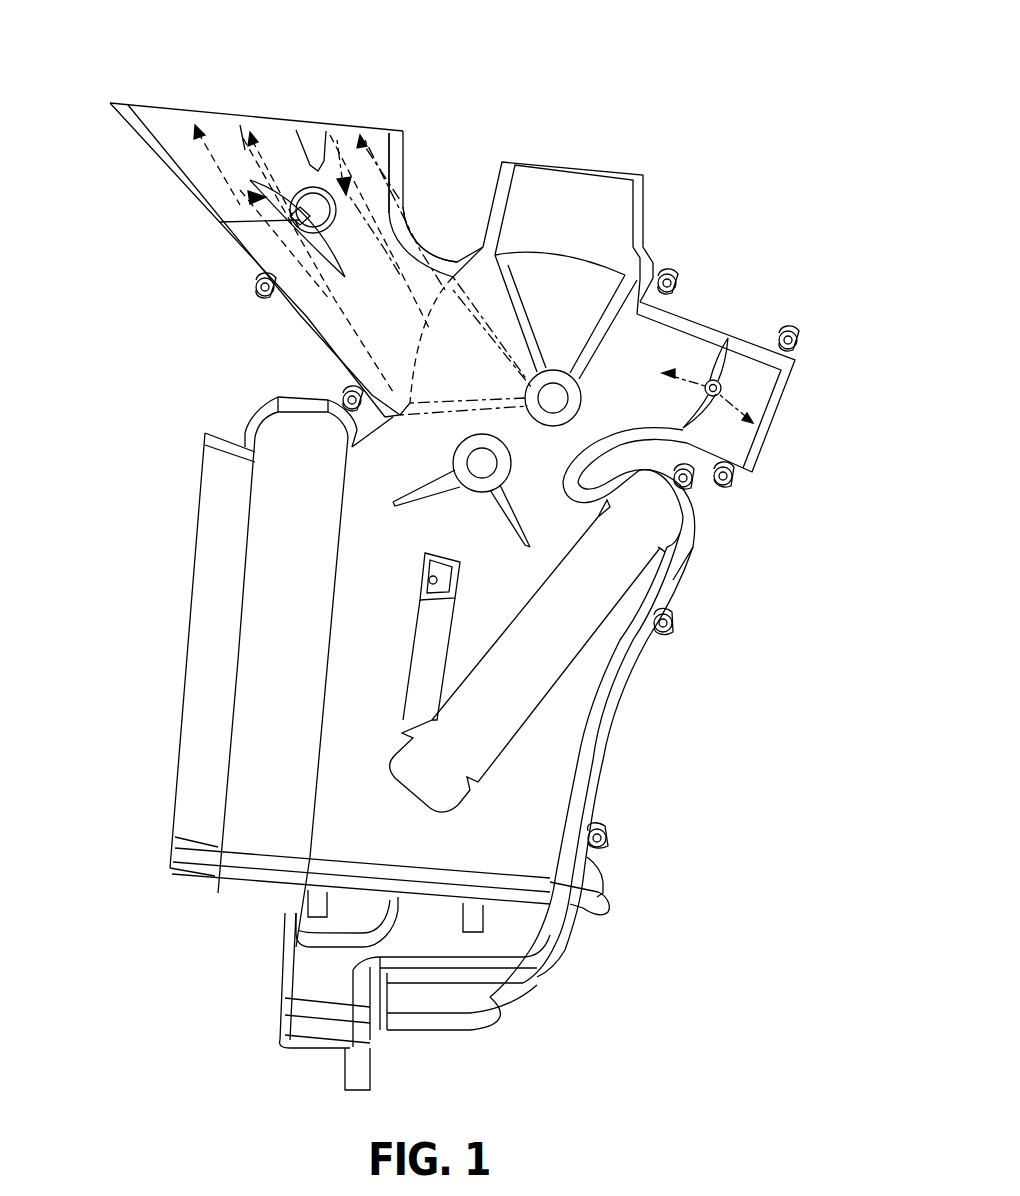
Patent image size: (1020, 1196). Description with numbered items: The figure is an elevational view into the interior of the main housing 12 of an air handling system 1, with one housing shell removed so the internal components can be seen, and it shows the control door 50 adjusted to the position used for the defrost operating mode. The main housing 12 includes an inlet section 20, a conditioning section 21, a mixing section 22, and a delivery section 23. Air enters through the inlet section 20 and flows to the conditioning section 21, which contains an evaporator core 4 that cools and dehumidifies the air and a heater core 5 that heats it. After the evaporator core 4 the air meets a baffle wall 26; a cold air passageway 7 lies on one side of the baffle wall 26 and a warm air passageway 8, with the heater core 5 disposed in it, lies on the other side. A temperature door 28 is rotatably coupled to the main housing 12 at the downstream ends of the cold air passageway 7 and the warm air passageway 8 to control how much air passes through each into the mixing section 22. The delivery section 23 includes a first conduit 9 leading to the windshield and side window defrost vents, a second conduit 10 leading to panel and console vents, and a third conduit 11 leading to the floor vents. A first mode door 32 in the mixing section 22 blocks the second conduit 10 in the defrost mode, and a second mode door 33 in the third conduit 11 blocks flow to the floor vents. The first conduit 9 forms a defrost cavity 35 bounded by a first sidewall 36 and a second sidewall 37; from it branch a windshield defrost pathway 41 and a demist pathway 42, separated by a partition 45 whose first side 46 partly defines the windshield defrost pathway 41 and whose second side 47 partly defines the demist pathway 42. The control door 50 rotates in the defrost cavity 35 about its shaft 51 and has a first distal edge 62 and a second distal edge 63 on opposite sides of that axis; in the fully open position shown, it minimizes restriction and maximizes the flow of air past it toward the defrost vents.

The air handling system 1 is at (700, 188).
The evaporator core 4 is at (237, 768).
The heater core 5 is at (495, 727).
The cold air passageway 7 is at (390, 470).
The warm air passageway 8 is at (533, 490).
The first conduit 9 is at (345, 290).
The second conduit 10 is at (567, 188).
The third conduit 11 is at (697, 337).
The main housing 12 is at (627, 668).
The inlet section 20 is at (236, 545).
The conditioning section 21 is at (414, 545).
The mixing section 22 is at (641, 371).
The delivery section 23 is at (152, 240).
The baffle wall 26 is at (427, 633).
The temperature door 28 is at (482, 478).
The first mode door 32 is at (578, 398).
The second mode door 33 is at (727, 385).
The defrost cavity 35 is at (350, 197).
The first sidewall 36 is at (220, 222).
The second sidewall 37 is at (405, 243).
The windshield defrost pathway 41 is at (240, 125).
The demist pathway 42 is at (370, 130).
The partition 45 is at (301, 128).
The first side 46 is at (273, 120).
The second side 47 is at (337, 125).
The control door 50 is at (250, 197).
The shaft 51 is at (290, 216).
The first distal edge 62 is at (223, 142).
The second distal edge 63 is at (272, 252).